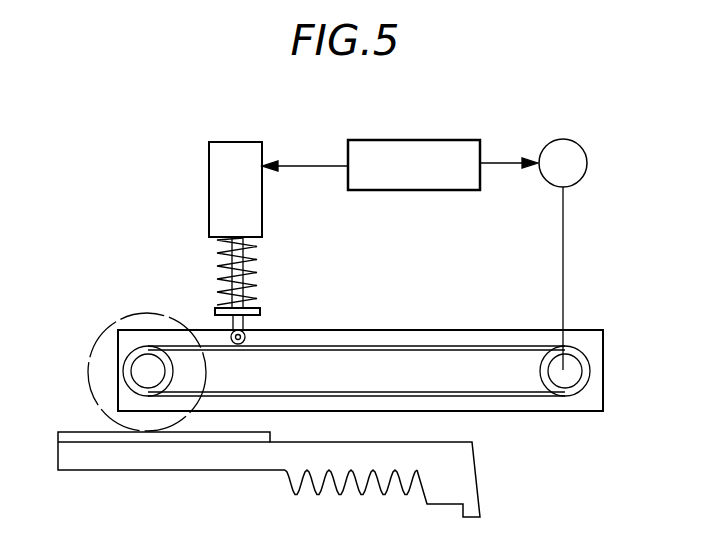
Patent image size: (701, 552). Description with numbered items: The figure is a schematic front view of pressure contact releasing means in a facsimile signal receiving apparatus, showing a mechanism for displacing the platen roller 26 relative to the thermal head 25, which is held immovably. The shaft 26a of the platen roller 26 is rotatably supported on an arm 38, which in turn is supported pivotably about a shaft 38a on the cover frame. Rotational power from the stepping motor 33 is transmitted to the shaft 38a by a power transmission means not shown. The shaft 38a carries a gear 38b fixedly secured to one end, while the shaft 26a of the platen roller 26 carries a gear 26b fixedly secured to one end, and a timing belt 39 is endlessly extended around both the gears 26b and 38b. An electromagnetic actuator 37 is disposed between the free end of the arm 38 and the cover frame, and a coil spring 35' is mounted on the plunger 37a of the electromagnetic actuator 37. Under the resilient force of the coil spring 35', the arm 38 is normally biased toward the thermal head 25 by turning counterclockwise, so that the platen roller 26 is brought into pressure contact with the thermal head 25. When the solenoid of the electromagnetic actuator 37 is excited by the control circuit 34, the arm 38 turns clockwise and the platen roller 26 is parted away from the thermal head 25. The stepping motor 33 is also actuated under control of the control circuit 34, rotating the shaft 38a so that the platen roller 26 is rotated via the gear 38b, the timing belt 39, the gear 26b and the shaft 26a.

The electromagnetic actuator 37 is at (209, 167).
The control circuit 34 is at (421, 140).
The stepping motor 33 is at (578, 149).
The coil spring 35' is at (262, 271).
The plunger 37a is at (226, 283).
The arm 38 is at (352, 330).
The timing belt 39 is at (444, 346).
The platen roller 26 is at (135, 322).
The shaft of the platen roller 26a is at (137, 368).
The gear 26b is at (130, 360).
The shaft 38a is at (580, 377).
The gear 38b is at (570, 394).
The thermal head 25 is at (164, 462).